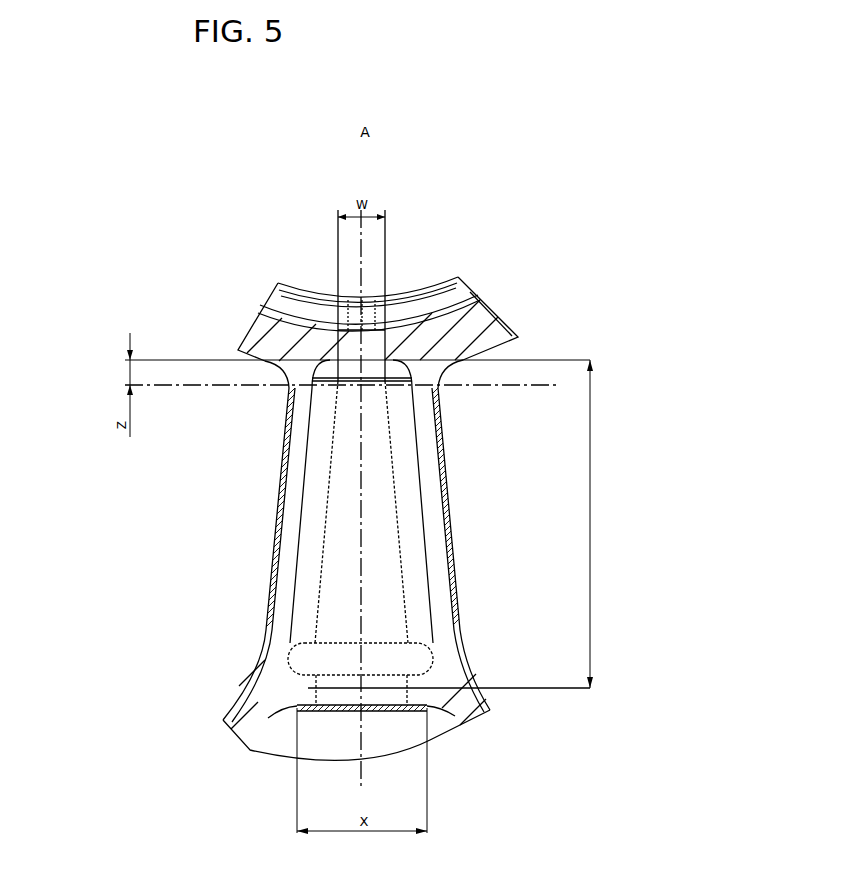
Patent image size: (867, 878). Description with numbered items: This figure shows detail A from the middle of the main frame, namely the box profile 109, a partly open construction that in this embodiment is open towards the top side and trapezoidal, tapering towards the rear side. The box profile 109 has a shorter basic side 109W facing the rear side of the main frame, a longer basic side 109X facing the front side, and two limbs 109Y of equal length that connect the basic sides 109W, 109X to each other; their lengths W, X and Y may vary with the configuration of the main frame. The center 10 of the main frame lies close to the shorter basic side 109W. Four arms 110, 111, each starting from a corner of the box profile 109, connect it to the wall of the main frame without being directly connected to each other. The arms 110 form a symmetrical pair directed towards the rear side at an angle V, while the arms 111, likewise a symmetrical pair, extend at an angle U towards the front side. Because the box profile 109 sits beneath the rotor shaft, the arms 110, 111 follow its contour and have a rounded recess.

The center of the main frame 10 is at (356, 392).
The box profile 109 is at (383, 479).
The shorter basic side 109W is at (362, 362).
The longer basic side 109X is at (367, 688).
The limbs 109Y is at (447, 535).
The arms 110 is at (245, 332).
The arms 111 is at (235, 733).